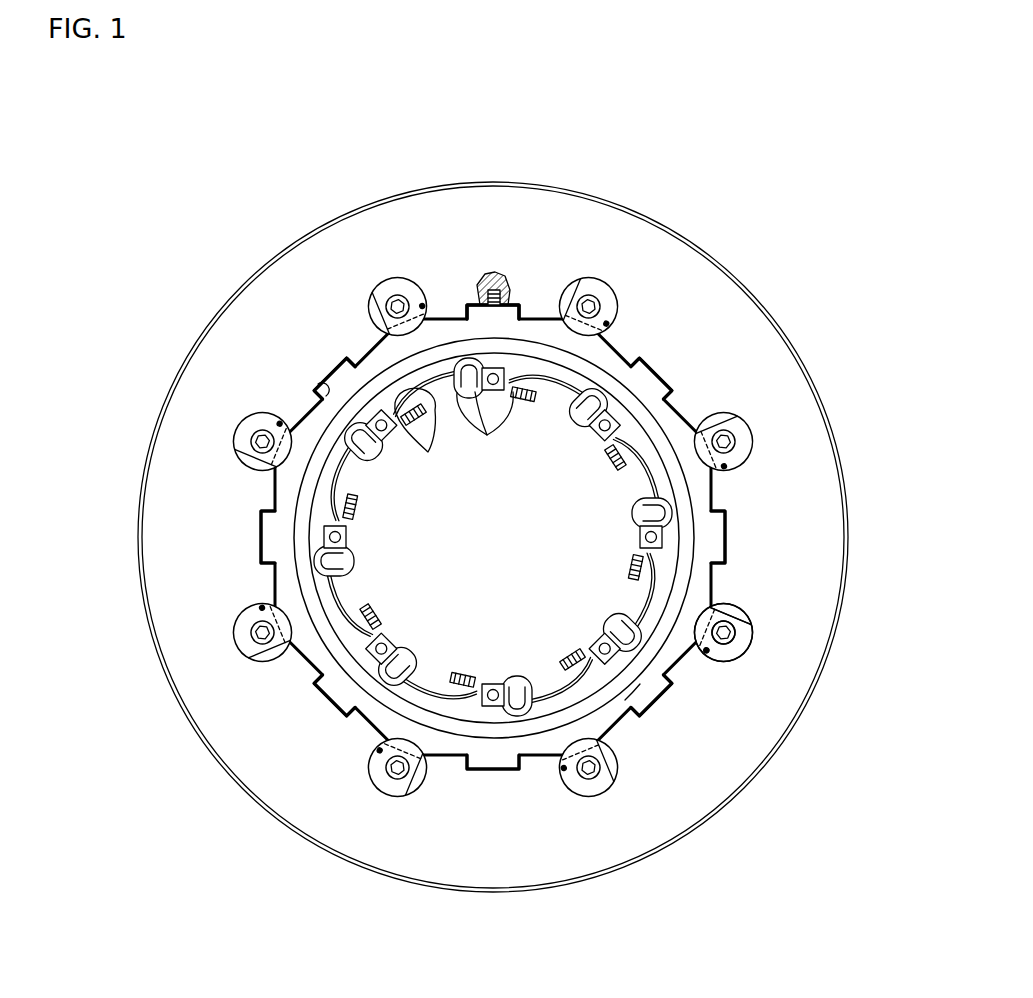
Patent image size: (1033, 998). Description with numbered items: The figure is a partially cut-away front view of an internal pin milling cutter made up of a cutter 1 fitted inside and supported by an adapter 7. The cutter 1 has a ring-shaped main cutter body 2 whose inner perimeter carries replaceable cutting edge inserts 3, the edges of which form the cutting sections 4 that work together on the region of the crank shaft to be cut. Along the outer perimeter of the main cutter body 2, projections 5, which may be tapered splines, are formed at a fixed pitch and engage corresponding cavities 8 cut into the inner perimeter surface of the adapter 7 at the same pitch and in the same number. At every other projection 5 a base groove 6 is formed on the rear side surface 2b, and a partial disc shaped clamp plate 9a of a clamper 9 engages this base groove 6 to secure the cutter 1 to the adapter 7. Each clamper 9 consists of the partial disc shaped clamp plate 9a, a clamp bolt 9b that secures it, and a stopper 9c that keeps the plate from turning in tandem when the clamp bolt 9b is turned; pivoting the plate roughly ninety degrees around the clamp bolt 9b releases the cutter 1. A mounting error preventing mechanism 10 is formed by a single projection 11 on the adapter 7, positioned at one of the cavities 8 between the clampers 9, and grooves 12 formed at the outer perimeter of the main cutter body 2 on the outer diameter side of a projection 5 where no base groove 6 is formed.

The cutter 1 is at (655, 392).
The main cutter body 2 is at (683, 500).
The side surface 2b is at (647, 693).
The replaceable cutting edge insert 3 is at (428, 442).
The cutting section 4 is at (486, 430).
The projection 5 is at (348, 365).
The base groove 6 is at (700, 660).
The adapter 7 is at (686, 232).
The cavity 8 is at (323, 383).
The clamper 9 is at (573, 800).
The partial disc shaped clamp plate 9a is at (730, 654).
The clamp bolt 9b is at (738, 637).
The stopper 9c is at (709, 660).
The mounting error preventing mechanism 10 is at (574, 211).
The projection 11 is at (497, 282).
The groove 12 is at (512, 300).